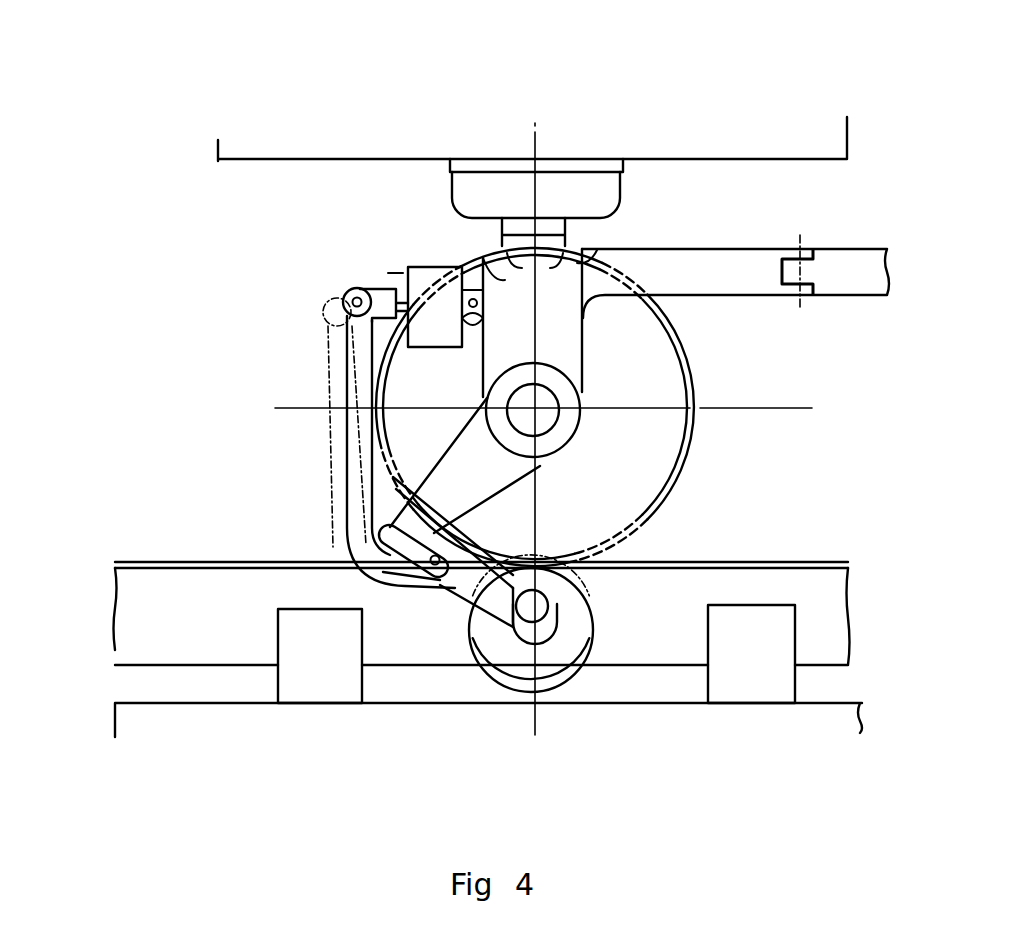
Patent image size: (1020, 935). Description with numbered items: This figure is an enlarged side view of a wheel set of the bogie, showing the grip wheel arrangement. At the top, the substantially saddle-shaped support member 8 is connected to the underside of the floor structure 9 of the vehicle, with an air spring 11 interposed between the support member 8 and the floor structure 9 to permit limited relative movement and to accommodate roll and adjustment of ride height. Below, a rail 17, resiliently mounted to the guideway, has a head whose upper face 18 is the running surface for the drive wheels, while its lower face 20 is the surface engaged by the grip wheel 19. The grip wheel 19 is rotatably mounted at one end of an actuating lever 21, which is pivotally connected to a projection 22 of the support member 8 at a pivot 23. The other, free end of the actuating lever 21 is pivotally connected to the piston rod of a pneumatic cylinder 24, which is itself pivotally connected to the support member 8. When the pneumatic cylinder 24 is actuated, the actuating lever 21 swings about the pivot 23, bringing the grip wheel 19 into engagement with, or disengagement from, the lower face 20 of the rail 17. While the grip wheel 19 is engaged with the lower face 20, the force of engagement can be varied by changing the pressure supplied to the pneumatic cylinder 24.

The support member 8 is at (477, 258).
The floor structure 9 is at (233, 158).
The air spring 11 is at (565, 188).
The rail 17 is at (128, 602).
The upper face 18 is at (170, 562).
The grip wheel 19 is at (567, 650).
The lower face 20 is at (193, 572).
The actuating lever 21 is at (352, 493).
The projection 22 is at (410, 548).
The pivot 23 is at (448, 582).
The pneumatic cylinder 24 is at (421, 267).